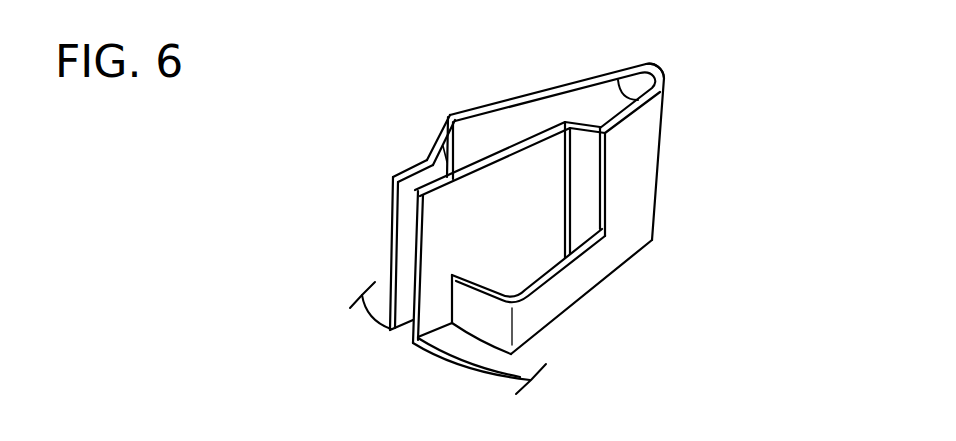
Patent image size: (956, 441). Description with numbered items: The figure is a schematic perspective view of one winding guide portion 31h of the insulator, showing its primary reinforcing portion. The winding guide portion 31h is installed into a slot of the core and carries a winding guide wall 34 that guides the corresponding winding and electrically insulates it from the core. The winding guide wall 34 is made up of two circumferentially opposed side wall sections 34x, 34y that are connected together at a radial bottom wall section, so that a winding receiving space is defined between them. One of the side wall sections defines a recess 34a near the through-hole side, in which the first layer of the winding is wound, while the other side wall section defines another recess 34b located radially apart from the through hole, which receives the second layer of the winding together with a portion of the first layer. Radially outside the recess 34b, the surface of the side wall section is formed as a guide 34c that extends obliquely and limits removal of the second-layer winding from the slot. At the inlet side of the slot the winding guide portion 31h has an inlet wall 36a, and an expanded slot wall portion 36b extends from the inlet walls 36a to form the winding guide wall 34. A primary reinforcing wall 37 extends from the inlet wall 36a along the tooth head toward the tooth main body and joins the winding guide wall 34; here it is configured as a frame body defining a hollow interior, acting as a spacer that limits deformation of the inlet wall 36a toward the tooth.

The winding guide wall 34 is at (485, 104).
The recess 34a is at (621, 78).
The recess 34b is at (512, 118).
The guide 34c is at (437, 136).
The side wall section 34x is at (543, 223).
The side wall section 34y is at (567, 84).
The winding guide portion 31h is at (640, 221).
The inlet wall 36a is at (440, 230).
The expanded slot wall portion 36b is at (638, 170).
The primary reinforcing wall 37 is at (530, 312).